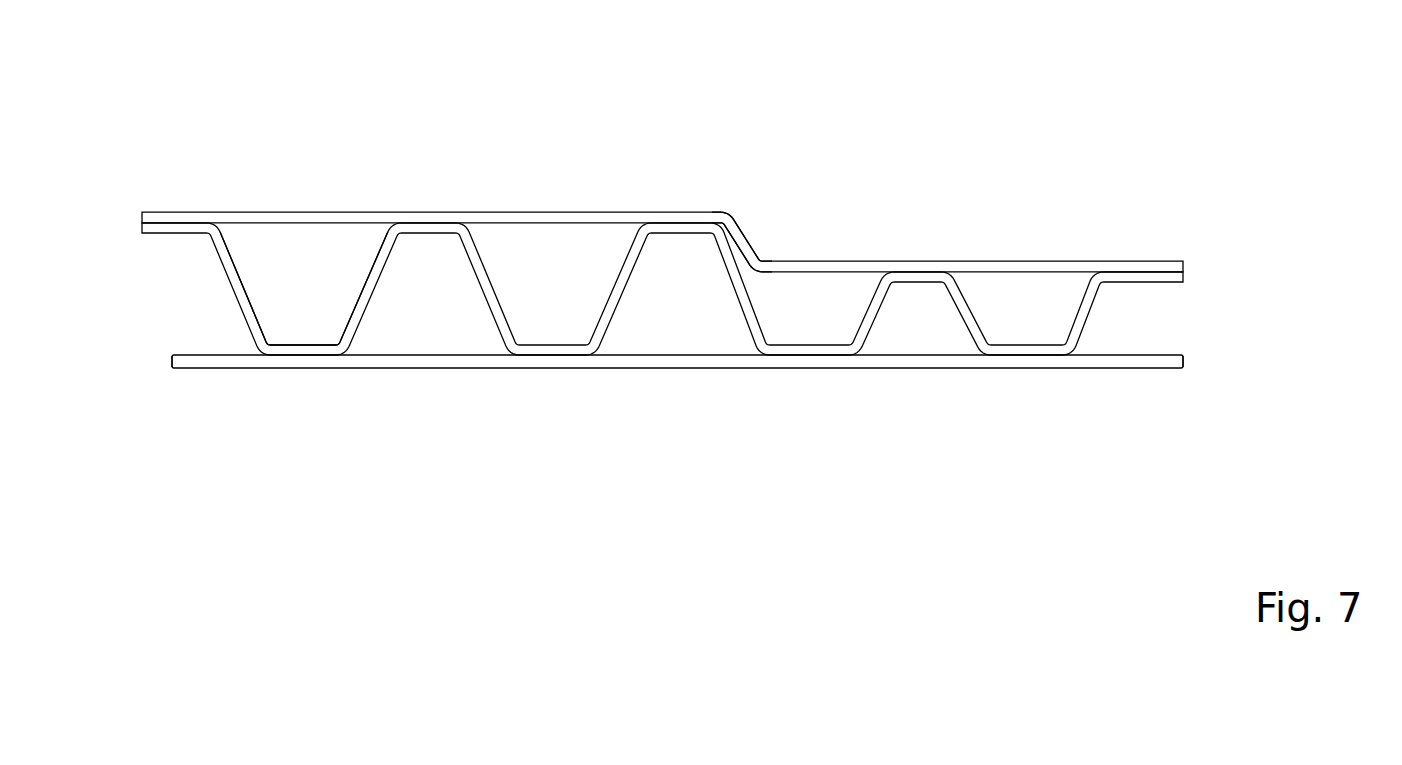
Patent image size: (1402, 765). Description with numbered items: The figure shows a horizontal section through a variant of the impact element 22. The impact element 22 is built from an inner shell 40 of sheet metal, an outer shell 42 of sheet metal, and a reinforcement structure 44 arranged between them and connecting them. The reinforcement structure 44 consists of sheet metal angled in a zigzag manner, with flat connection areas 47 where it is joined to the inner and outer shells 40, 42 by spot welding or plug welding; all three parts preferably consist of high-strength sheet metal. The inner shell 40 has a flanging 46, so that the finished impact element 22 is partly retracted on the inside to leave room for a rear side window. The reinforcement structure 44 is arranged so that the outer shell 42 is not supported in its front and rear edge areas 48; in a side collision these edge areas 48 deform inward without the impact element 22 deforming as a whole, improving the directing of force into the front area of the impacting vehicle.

The impact element 22 is at (1237, 278).
The inner shell 40 is at (676, 212).
The outer shell 42 is at (545, 374).
The reinforcement structure 44 is at (375, 291).
The flanging 46 is at (810, 215).
The flat connection areas 47 is at (318, 308).
The front and rear edge areas 48 is at (219, 405).